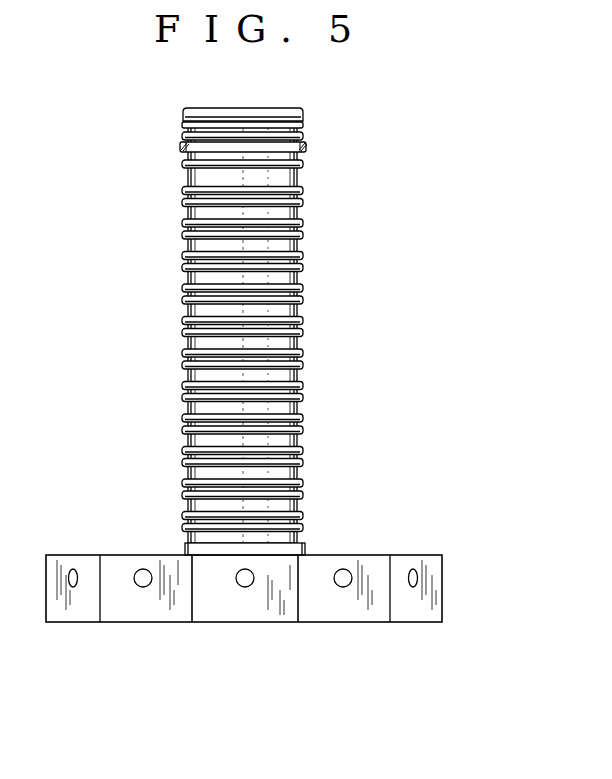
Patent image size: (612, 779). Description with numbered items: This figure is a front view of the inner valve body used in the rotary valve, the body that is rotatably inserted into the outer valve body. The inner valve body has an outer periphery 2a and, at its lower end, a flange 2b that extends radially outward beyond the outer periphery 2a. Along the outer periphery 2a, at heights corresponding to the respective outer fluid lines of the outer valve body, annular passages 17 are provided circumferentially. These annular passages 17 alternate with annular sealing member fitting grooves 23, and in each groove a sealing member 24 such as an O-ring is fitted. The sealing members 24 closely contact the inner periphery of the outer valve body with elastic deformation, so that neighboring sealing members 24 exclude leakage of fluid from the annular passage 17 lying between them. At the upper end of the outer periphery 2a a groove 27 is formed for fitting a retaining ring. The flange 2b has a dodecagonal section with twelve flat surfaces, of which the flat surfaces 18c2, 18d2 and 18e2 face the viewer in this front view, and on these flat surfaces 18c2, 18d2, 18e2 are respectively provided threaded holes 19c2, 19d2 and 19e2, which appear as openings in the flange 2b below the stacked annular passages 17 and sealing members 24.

The outer periphery 2a is at (305, 136).
The flange 2b is at (443, 563).
The annular passages 17 is at (305, 198).
The annular sealing member fitting grooves 23 is at (185, 180).
The sealing member 24 is at (183, 147).
The groove 27 is at (185, 126).
The flat surface 18c2 is at (115, 610).
The flat surface 18d2 is at (213, 607).
The flat surface 18e2 is at (327, 607).
The threaded hole 19c2 is at (138, 605).
The threaded hole 19d2 is at (245, 588).
The threaded hole 19e2 is at (345, 590).